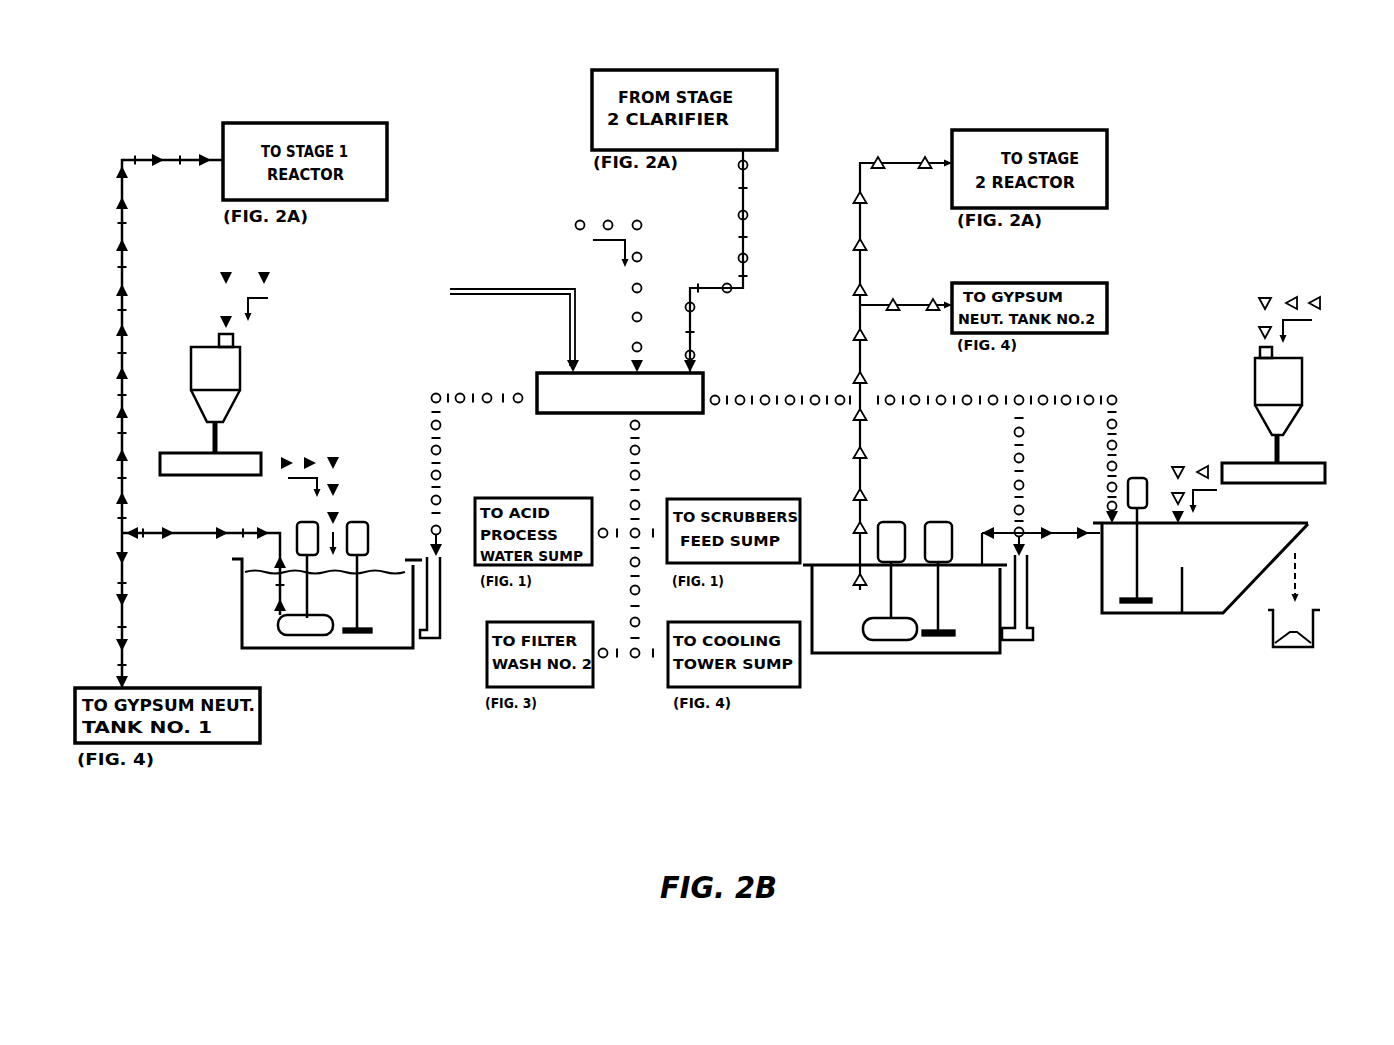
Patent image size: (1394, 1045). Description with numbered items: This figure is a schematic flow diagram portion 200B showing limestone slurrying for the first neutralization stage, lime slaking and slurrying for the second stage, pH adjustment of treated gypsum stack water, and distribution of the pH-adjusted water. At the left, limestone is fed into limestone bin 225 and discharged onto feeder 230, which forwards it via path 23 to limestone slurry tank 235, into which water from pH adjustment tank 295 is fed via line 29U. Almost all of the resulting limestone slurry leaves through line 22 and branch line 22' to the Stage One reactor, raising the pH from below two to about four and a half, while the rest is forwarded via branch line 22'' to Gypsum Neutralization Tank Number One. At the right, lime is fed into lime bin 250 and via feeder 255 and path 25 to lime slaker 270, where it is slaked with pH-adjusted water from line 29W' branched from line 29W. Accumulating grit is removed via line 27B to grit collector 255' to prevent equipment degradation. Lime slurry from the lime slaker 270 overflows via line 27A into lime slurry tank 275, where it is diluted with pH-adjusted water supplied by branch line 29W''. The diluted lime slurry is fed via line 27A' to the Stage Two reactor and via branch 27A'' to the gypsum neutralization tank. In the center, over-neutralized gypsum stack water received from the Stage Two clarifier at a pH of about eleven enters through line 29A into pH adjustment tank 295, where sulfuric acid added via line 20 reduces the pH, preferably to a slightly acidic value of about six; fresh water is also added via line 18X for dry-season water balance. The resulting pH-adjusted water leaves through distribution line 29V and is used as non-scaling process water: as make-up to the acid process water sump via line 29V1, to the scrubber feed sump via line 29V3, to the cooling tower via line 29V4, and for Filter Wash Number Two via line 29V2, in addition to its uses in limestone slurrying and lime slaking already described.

The fresh water line 18X is at (642, 236).
The sulfuric acid line 20 is at (558, 294).
The limestone slurry line 22 is at (204, 571).
The branch line 22' is at (169, 343).
The branch line 22'' is at (97, 610).
The limestone feed path 23 is at (340, 500).
The lime feed path 25 is at (1205, 466).
The lime slurry overflow line 27A is at (1041, 550).
The diluted lime slurry line 27A' is at (884, 365).
The branch line 27A'' is at (906, 285).
The grit removal line 27B is at (1298, 568).
The clarifier effluent line 29A is at (697, 312).
The pH-adjusted water line 29U is at (433, 393).
The pH adjusted water distribution line 29V is at (634, 456).
The make-up line to acid process water sump 29V1 is at (609, 527).
The line to Filter Wash Number Two 29V2 is at (655, 527).
The make-up line to scrubber feed sump 29V3 is at (610, 648).
The make-up line to cooling tower 29V4 is at (653, 648).
The pH-adjusted water line 29W is at (914, 381).
The branch line to lime slaker 29W' is at (1084, 467).
The branch line to lime slurry tank 29W'' is at (981, 487).
The neutralization reagent preparation system 200B is at (1128, 335).
The limestone bin 225 is at (246, 398).
The feeder 230 is at (263, 464).
The limestone slurry tank 235 is at (242, 634).
The lime bin 250 is at (1303, 392).
The feeder 255 is at (1273, 487).
The grit collector 255' is at (1316, 638).
The lime slaker 270 is at (1227, 617).
The lime slurry tank 275 is at (1000, 650).
The pH adjustment tank 295 is at (705, 382).